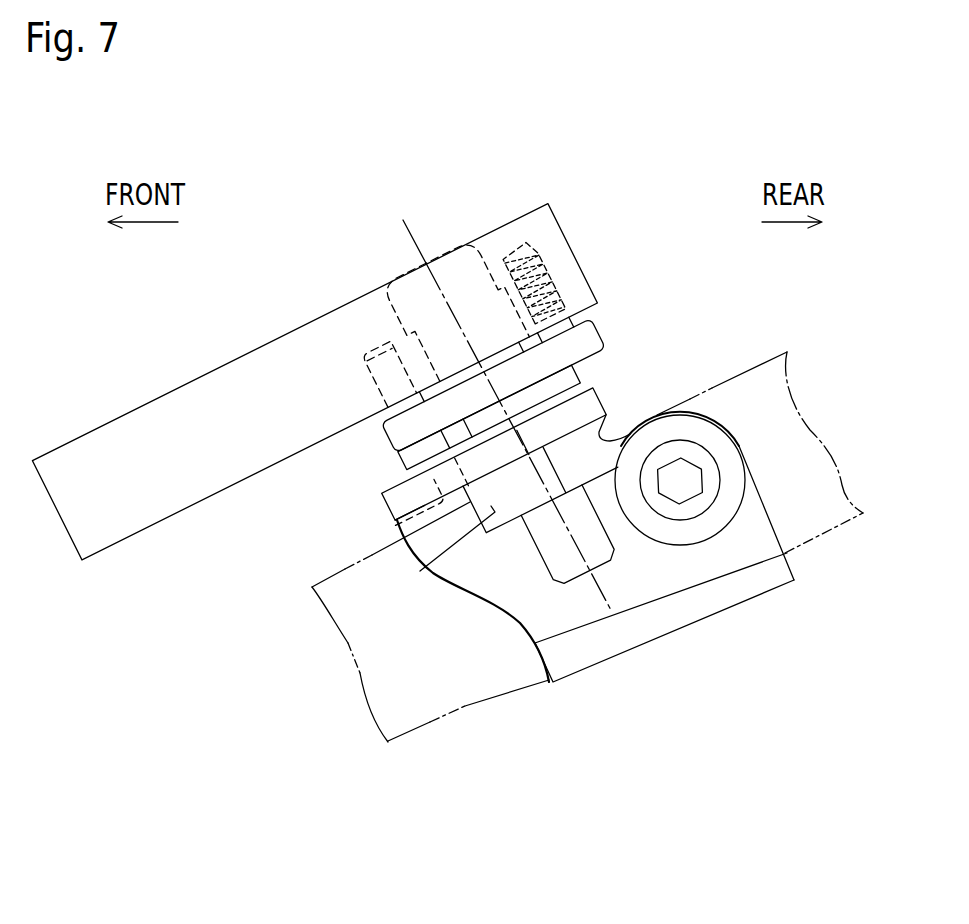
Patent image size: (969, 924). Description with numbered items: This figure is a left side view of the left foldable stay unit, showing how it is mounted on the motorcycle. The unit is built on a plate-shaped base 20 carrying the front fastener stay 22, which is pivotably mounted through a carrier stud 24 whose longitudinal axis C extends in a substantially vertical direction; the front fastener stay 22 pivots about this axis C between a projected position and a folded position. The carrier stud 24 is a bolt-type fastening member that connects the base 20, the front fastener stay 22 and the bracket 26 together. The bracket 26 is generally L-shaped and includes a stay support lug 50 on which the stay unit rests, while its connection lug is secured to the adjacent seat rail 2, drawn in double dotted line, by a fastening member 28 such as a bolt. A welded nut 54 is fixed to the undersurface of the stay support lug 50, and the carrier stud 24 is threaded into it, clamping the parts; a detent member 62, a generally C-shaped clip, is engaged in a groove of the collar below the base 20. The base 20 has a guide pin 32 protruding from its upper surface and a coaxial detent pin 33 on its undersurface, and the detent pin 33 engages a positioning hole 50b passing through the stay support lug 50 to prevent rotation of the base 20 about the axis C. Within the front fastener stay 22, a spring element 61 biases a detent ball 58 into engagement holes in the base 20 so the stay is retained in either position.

The seat rail 2 is at (418, 727).
The base 20 is at (588, 342).
The front fastener stay 22 is at (226, 388).
The carrier stud 24 is at (485, 252).
The bracket 26 is at (750, 522).
The fastening member 28 is at (690, 450).
The guide pin 32 is at (383, 392).
The detent pin 33 is at (440, 453).
The stay support lug 50 is at (590, 390).
The positioning hole 50b is at (397, 522).
The welded nut 54 is at (330, 606).
The detent ball 58 is at (578, 310).
The spring element 61 is at (552, 275).
The detent member 62 is at (572, 370).
The axis C is at (597, 595).